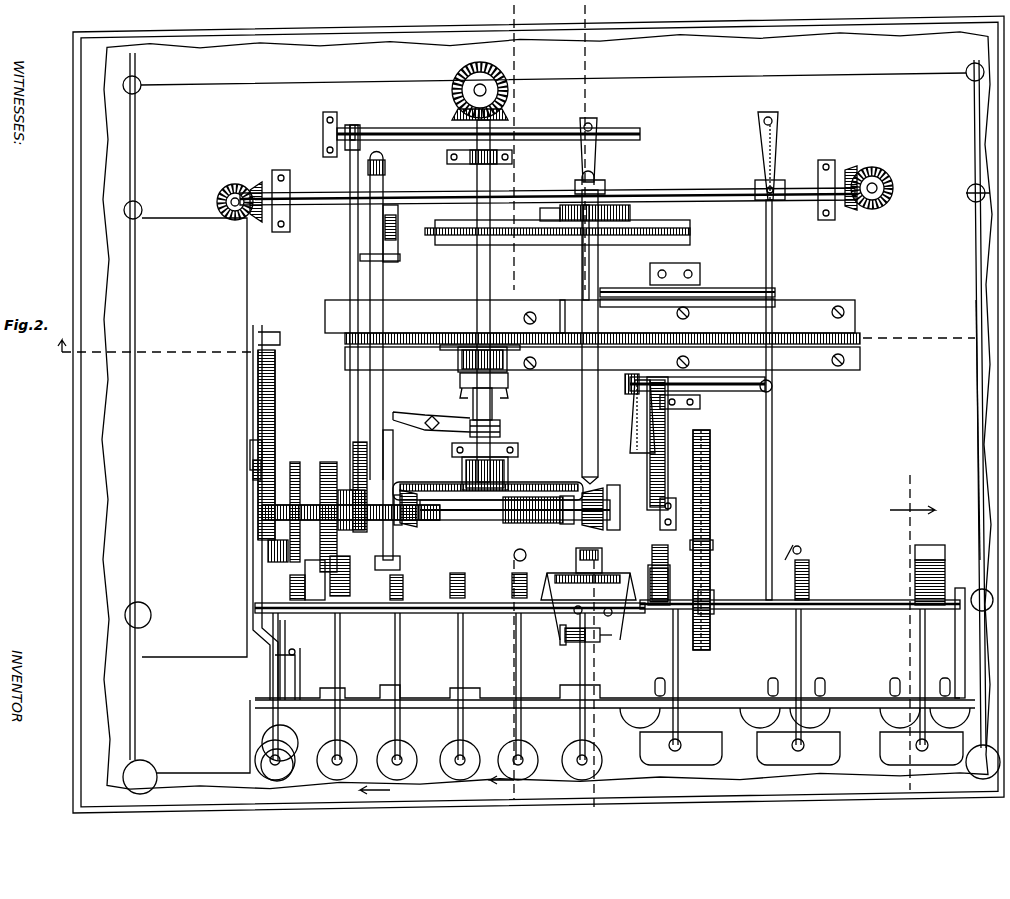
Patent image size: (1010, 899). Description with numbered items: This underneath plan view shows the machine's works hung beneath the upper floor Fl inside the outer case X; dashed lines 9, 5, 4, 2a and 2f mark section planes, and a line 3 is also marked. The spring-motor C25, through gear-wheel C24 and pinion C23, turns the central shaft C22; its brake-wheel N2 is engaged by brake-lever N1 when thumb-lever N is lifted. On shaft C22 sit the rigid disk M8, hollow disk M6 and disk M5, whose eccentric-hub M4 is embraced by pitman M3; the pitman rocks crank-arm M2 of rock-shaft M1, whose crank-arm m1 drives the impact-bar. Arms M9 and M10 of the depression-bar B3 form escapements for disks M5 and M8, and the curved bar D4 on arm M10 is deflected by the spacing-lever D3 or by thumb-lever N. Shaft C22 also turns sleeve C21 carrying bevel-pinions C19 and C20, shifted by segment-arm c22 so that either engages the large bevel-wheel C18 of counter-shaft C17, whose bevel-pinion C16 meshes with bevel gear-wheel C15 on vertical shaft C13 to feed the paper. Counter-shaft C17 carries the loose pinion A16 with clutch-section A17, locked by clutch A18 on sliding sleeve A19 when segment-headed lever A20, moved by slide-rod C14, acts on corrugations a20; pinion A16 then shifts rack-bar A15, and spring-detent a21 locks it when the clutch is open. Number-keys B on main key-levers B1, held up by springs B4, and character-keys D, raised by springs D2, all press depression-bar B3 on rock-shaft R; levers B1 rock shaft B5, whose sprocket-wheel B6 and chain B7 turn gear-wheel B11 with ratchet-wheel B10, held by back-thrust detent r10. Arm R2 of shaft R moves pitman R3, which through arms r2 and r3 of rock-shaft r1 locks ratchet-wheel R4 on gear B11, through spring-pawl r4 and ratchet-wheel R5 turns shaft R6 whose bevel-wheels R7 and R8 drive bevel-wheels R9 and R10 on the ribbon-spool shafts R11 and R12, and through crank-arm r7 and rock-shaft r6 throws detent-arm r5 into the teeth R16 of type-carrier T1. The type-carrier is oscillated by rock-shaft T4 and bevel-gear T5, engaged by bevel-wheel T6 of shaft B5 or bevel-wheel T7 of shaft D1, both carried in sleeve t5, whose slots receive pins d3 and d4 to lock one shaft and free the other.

The section line 9 9 is at (502, 401).
The section line 3 is at (578, 145).
The section line 5 5 is at (599, 685).
The section line 4 4 is at (511, 350).
The section line 2a is at (912, 626).
The section line 2f is at (375, 783).
The bevel gear-wheel C15 is at (490, 52).
The vertical shaft C13 is at (477, 86).
The bevel-pinion C16 is at (505, 114).
The counter-shaft C17 is at (490, 262).
The crank-arm M2 is at (352, 130).
The rock-shaft M1 is at (418, 122).
The crank-arm m1 is at (596, 160).
The horizontal shaft R6 is at (556, 180).
The type-carrier T1 is at (665, 228).
The curved row of teeth R16 is at (622, 236).
The detent-arm r5 is at (583, 272).
The ratchet-wheel R5 is at (775, 165).
The bevel-wheel R8 is at (840, 155).
The bevel-wheel R10 is at (883, 177).
The vertical shaft R12 is at (876, 191).
The bevel-wheel R9 is at (233, 185).
The bevel-wheel R7 is at (258, 185).
The vertical shaft R11 is at (236, 206).
The pitman M3 is at (350, 290).
The slide-rod C14 is at (383, 290).
The large bevel-wheel C18 is at (398, 258).
The bevel-pinion C19 is at (368, 258).
The rock-shaft r6 is at (700, 280).
The spring-pawl r4 is at (775, 278).
The crank-arm r7 is at (775, 300).
The pinion A16 is at (480, 335).
The rack-bar A15 is at (650, 333).
The spring-detent a21 is at (455, 353).
The clutch-section A17 is at (505, 362).
The clutch A18 is at (500, 382).
The segment-headed lever A20 is at (406, 404).
The sliding sleeve A19 is at (470, 404).
The corrugations a20 is at (500, 430).
The rock-shaft T4 is at (598, 395).
The detent arm r3 is at (635, 425).
The short rock-shaft r1 is at (730, 380).
The arm r2 is at (772, 388).
The upper floor Fl is at (848, 399).
The outer case X is at (975, 424).
The spring-motor C25 is at (221, 462).
The gear-wheel C24 is at (250, 482).
The brake-wheel N2 is at (250, 482).
The disk M8 is at (290, 485).
The hollow disk M6 is at (325, 470).
The eccentric-hub M4 is at (345, 495).
The disk M5 is at (355, 460).
The escapement-arm M9 is at (350, 578).
The escapement-arm M10 is at (305, 572).
The pinion C23 is at (270, 552).
The sleeve C21 is at (500, 512).
The toothed segment-arm c22 is at (566, 524).
The central shaft C22 is at (398, 525).
The bevel-pinion C20 is at (598, 490).
The ratchet-wheel R4 is at (620, 490).
The gear-wheel B11 is at (668, 445).
The ratchet-wheel B10 is at (710, 480).
The chain B7 is at (710, 520).
The pitman R3 is at (772, 500).
The back-thrust detent r10 is at (684, 512).
The bevel-gear T5 is at (560, 578).
The sleeve t5 is at (602, 555).
The rock-shaft B5 is at (650, 580).
The sprocket-wheel B6 is at (702, 592).
The springs B4 is at (818, 575).
The upwardly-projecting arm R2 is at (785, 555).
The rock-shaft D1 is at (500, 614).
The rock-shaft R is at (358, 617).
The springs D2 is at (450, 585).
The character-keys D is at (400, 655).
The depression-bar B3 is at (870, 690).
The main key-lever B1 is at (673, 660).
The number-keys B is at (801, 748).
The thumb-lever N is at (262, 742).
The brake-lever N1 is at (262, 762).
The spacing-key lever D3 is at (262, 622).
The curved bar D4 is at (275, 655).
The bevel gear-wheel T7 is at (565, 640).
The bevel gear-wheel T6 is at (608, 640).
The pin d3 is at (580, 614).
The pin d4 is at (608, 616).